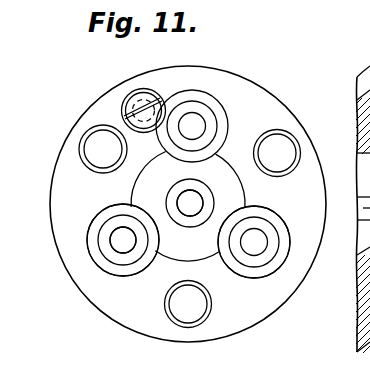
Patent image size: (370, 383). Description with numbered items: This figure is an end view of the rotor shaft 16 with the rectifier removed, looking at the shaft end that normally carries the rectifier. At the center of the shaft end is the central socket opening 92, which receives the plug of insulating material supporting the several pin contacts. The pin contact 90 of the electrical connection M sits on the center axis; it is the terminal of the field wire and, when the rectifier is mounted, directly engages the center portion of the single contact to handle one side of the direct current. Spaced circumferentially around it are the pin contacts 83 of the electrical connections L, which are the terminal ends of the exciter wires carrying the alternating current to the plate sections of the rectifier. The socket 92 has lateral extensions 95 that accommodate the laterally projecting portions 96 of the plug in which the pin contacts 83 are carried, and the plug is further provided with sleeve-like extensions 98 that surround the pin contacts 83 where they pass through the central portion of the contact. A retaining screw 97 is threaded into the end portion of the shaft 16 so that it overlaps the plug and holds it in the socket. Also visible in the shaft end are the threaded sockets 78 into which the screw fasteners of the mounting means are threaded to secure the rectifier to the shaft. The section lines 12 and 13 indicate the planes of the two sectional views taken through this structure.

The section line 12— 12 is at (137, 50).
The section line 13— 13 is at (82, 68).
The shaft 16 is at (355, 322).
The sockets 78 is at (281, 137).
The pin contacts 83 is at (206, 113).
The pin contact 90 is at (187, 200).
The socket opening 92 is at (160, 260).
The lateral extensions 95 is at (226, 127).
The laterally projecting portions 96 is at (228, 116).
The retaining screw 97 is at (141, 108).
The sleeve-like extensions 98 is at (244, 280).
The electrical connections L is at (116, 238).
The electrical connection M is at (200, 201).